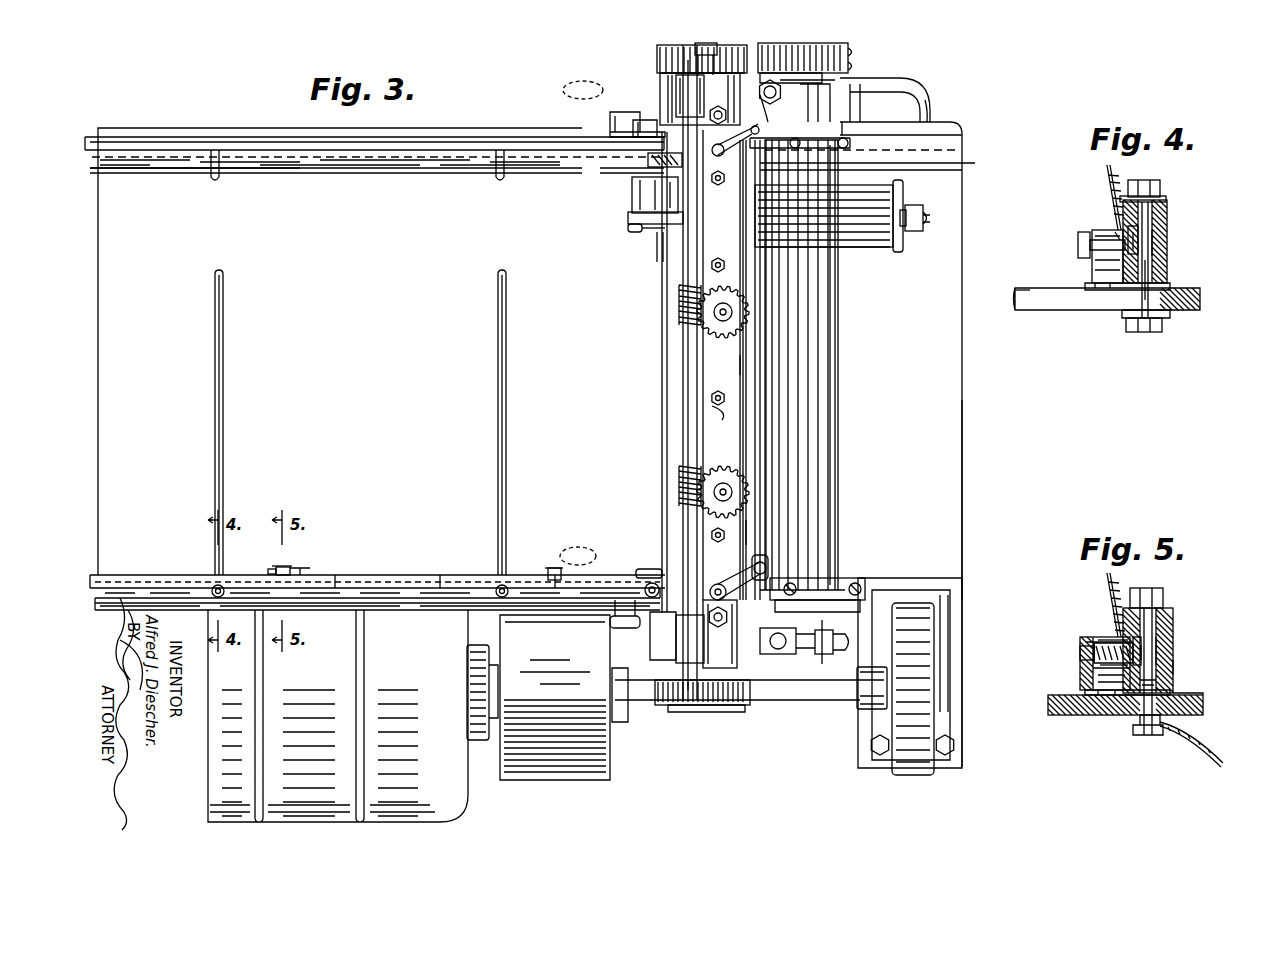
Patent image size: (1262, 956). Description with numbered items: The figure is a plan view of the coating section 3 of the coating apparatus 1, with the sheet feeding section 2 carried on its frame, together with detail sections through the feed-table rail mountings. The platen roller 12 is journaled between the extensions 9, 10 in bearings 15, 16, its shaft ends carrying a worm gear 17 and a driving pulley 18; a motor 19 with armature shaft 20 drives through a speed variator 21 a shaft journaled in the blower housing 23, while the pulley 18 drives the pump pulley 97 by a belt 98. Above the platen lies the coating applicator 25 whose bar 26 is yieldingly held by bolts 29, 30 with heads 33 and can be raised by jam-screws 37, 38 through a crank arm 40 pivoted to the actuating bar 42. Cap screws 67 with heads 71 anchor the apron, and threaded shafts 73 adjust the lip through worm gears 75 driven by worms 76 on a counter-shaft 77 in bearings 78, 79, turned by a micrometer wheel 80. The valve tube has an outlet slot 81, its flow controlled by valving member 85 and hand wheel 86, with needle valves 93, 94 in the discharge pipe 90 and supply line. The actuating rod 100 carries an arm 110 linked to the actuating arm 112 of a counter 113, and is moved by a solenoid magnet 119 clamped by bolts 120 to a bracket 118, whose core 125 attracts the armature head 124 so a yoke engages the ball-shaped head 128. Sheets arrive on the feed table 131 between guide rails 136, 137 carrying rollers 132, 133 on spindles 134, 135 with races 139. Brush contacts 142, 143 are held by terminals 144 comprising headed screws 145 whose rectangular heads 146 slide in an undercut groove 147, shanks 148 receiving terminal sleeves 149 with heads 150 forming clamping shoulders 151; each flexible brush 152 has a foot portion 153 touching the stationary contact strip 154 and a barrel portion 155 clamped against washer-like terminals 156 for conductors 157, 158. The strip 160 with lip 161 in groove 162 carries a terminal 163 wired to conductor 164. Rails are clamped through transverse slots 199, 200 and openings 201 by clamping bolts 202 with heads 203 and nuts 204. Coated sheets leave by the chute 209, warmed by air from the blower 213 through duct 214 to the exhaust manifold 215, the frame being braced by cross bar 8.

In FIG. 3, the coating apparatus 1 is at (922, 128).
In FIG. 3, the sheet feeding section 2 is at (600, 118).
In FIG. 3, the coating section 3 is at (748, 532).
In FIG. 3, the cross bar 8 is at (964, 605).
In FIG. 3, the extension 9 is at (862, 584).
In FIG. 3, the extension 10 is at (870, 125).
In FIG. 3, the platen roller 12 is at (778, 470).
In FIG. 3, the bearing 15 is at (642, 630).
In FIG. 3, the bearing 16 is at (668, 84).
In FIG. 3, the worm gear 17 is at (730, 706).
In FIG. 3, the driving pulley 18 is at (658, 50).
In FIG. 3, the motor 19 is at (462, 782).
In FIG. 3, the armature shaft 20 is at (493, 682).
In FIG. 3, the speed variator 21 is at (548, 776).
In FIG. 3, the blower housing 23 is at (860, 710).
In FIG. 3, the coating applicator 25 is at (745, 365).
In FIG. 3, the bar 26 is at (750, 420).
In FIG. 3, the bolt 29 is at (714, 640).
In FIG. 3, the bolt 30 is at (718, 106).
In FIG. 3, the head 33 is at (714, 606).
In FIG. 3, the jam-screw 37 is at (716, 585).
In FIG. 3, the jam-screw 38 is at (716, 158).
In FIG. 3, the crank arm 40 is at (748, 150).
In FIG. 3, the actuating bar 42 is at (768, 448).
In FIG. 3, the cap screw 67 is at (722, 388).
In FIG. 3, the head 71 is at (720, 416).
In FIG. 3, the threaded shaft 73 is at (722, 470).
In FIG. 3, the worm gear 75 is at (723, 326).
In FIG. 3, the worm 76 is at (678, 312).
In FIG. 3, the counter-shaft 77 is at (686, 409).
In FIG. 3, the bearing 78 is at (675, 645).
In FIG. 3, the bearing 79 is at (678, 90).
In FIG. 3, the wheel 80 is at (686, 706).
In FIG. 3, the outlet slot 81 is at (683, 56).
In FIG. 3, the valving member 85 is at (716, 52).
In FIG. 3, the hand wheel 86 is at (710, 712).
In FIG. 3, the discharge pipe 90 is at (830, 654).
In FIG. 3, the needle valve 93 is at (785, 655).
In FIG. 3, the needle valve 94 is at (803, 84).
In FIG. 3, the pulley 97 is at (852, 50).
In FIG. 3, the belt 98 is at (852, 68).
In FIG. 3, the actuating rod 100 is at (657, 236).
In FIG. 3, the arm 110 is at (628, 227).
In FIG. 3, the actuating arm 112 is at (628, 216).
In FIG. 3, the counter 113 is at (631, 195).
In FIG. 3, the bracket 118 is at (898, 246).
In FIG. 3, the solenoid magnet 119 is at (872, 262).
In FIG. 3, the bolt 120 is at (852, 262).
In FIG. 3, the head 124 is at (912, 216).
In FIG. 3, the core 125 is at (902, 210).
In FIG. 3, the ball-shaped head 128 is at (924, 226).
In FIG. 3, the feed table 131 is at (160, 185).
In FIG. 4, the feed table 131 is at (1015, 308).
In FIG. 5, the feed table 131 is at (1205, 704).
In FIG. 3, the roller 132 is at (644, 570).
In FIG. 3, the roller 133 is at (652, 162).
In FIG. 3, the spindle 134 is at (645, 590).
In FIG. 3, the spindle 135 is at (645, 122).
In FIG. 3, the guide rail 136 is at (360, 575).
In FIG. 4, the guide rail 136 is at (1170, 212).
In FIG. 5, the guide rail 136 is at (1170, 612).
In FIG. 3, the guide rail 137 is at (418, 130).
In FIG. 3, the race 139 is at (758, 556).
In FIG. 3, the brush contact 142 is at (283, 567).
In FIG. 4, the brush contact 142 is at (1094, 260).
In FIG. 5, the brush contact 142 is at (1090, 677).
In FIG. 3, the brush contact 143 is at (548, 560).
In FIG. 5, the terminal 144 is at (1104, 650).
In FIG. 4, the headed screw 145 is at (1160, 252).
In FIG. 5, the headed screw 145 is at (1160, 640).
In FIG. 4, the rectangular shaped head 146 is at (1136, 244).
In FIG. 5, the rectangular shaped head 146 is at (1143, 655).
In FIG. 4, the undercut groove 147 is at (1140, 232).
In FIG. 5, the undercut groove 147 is at (1165, 628).
In FIG. 5, the shank 148 is at (1104, 642).
In FIG. 5, the terminal sleeve 149 is at (1108, 645).
In FIG. 3, the head 150 is at (280, 566).
In FIG. 4, the head 150 is at (1080, 246).
In FIG. 5, the head 150 is at (1080, 652).
In FIG. 5, the clamping shoulder 151 is at (1108, 648).
In FIG. 4, the flexible brush 152 is at (1090, 290).
In FIG. 5, the flexible brush 152 is at (1085, 702).
In FIG. 3, the foot portion 153 is at (316, 574).
In FIG. 4, the foot portion 153 is at (1102, 292).
In FIG. 5, the foot portion 153 is at (1100, 696).
In FIG. 3, the stationary contact strip 154 is at (405, 575).
In FIG. 4, the stationary contact strip 154 is at (1112, 292).
In FIG. 5, the stationary contact strip 154 is at (1118, 696).
In FIG. 3, the barrel portion 155 is at (270, 570).
In FIG. 4, the barrel portion 155 is at (1080, 234).
In FIG. 5, the barrel portion 155 is at (1106, 643).
In FIG. 4, the washer-like terminal 156 is at (1116, 236).
In FIG. 5, the conductor 157 is at (1118, 584).
In FIG. 4, the conductor 158 is at (1109, 200).
In FIG. 3, the strip of conductive material 160 is at (445, 575).
In FIG. 4, the strip of conductive material 160 is at (1178, 292).
In FIG. 5, the strip of conductive material 160 is at (1195, 697).
In FIG. 5, the lip portion 161 is at (1174, 685).
In FIG. 5, the groove 162 is at (1174, 668).
In FIG. 5, the terminal 163 is at (1155, 736).
In FIG. 5, the conductor 164 is at (1214, 754).
In FIG. 3, the transverse slot 199 is at (223, 332).
In FIG. 4, the transverse slot 199 is at (1030, 300).
In FIG. 3, the transverse slot 200 is at (498, 344).
In FIG. 4, the opening 201 is at (1162, 262).
In FIG. 4, the clamping bolt 202 is at (1168, 200).
In FIG. 3, the head 203 is at (510, 574).
In FIG. 4, the head 203 is at (1152, 180).
In FIG. 5, the head 203 is at (1160, 595).
In FIG. 4, the nut 204 is at (1162, 324).
In FIG. 3, the chute 209 is at (952, 496).
In FIG. 3, the blower 213 is at (922, 776).
In FIG. 3, the duct 214 is at (908, 113).
In FIG. 3, the exhaust manifold 215 is at (834, 358).